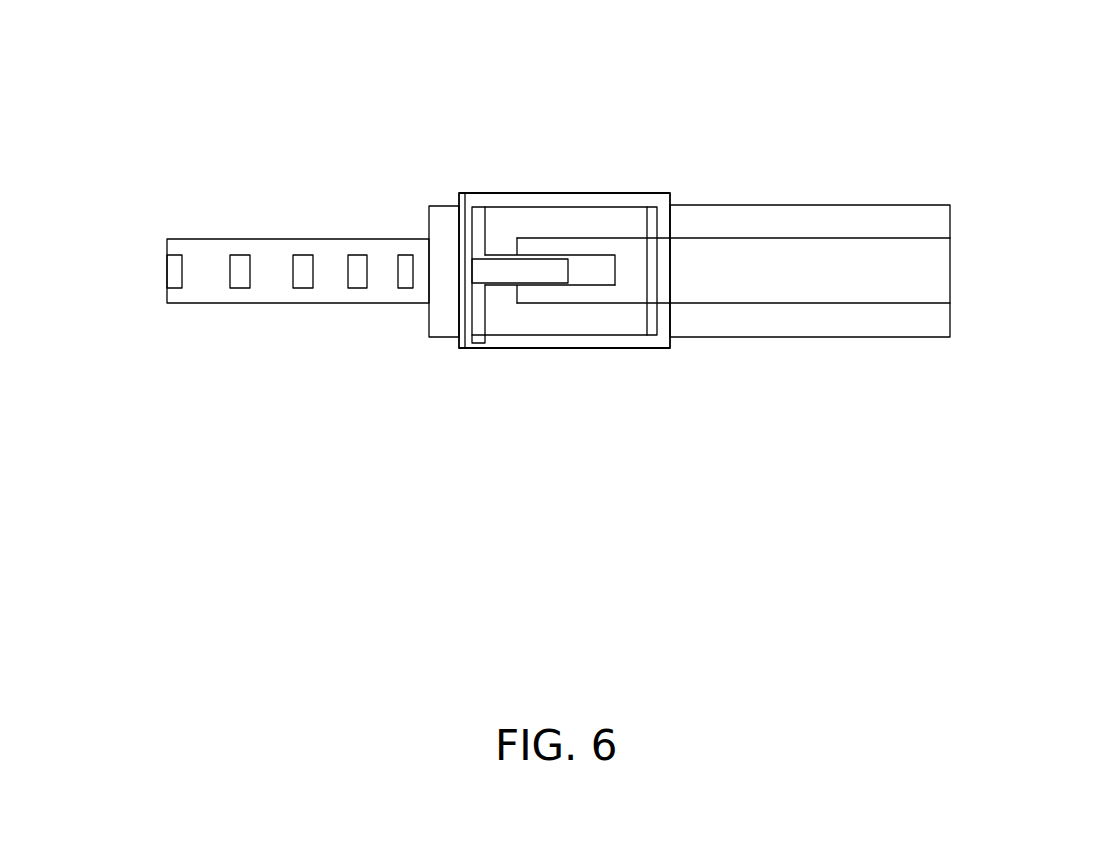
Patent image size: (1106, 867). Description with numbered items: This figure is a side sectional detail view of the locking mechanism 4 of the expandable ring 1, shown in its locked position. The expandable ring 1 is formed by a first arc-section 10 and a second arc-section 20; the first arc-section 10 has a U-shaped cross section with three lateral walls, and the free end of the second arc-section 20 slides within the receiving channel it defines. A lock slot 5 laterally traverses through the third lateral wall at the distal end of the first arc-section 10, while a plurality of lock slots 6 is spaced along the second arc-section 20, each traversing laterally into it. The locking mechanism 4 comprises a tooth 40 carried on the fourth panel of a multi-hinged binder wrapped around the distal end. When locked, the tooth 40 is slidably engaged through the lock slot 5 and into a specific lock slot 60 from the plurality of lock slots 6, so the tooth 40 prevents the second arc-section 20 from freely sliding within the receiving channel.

The expandable ring 1 is at (999, 58).
The locking mechanism 4 is at (601, 196).
The lock slot 5 is at (500, 255).
The plurality of lock slots 6 is at (348, 260).
The first arc-section 10 is at (497, 330).
The second arc-section 20 is at (643, 273).
The tooth 40 is at (535, 272).
The specific lock slot 60 is at (605, 287).